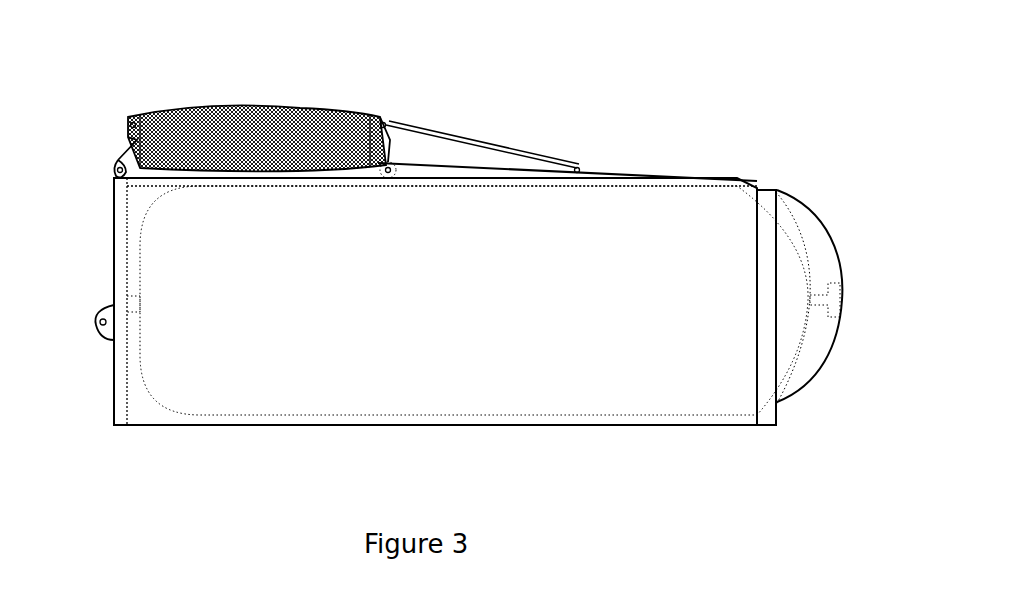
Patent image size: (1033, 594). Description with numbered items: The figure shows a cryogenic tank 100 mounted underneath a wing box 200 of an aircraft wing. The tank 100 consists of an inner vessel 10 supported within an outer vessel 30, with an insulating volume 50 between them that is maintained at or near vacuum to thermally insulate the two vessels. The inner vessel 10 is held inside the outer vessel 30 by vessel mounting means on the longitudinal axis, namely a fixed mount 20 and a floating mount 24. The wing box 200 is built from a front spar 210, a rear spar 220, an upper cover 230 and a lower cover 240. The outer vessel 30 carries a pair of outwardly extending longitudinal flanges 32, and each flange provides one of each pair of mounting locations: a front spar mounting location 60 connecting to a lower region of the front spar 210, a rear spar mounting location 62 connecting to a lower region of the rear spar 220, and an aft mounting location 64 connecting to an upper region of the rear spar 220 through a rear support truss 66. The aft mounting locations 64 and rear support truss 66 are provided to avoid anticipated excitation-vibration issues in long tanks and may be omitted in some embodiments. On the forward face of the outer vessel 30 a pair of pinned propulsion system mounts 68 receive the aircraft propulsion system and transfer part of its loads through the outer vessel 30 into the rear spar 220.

The inner vessel 10 is at (788, 370).
The fixed mount 20 is at (137, 285).
The floating mount 24 is at (813, 293).
The outer vessel 30 is at (800, 212).
The longitudinal flanges 32 is at (510, 173).
The insulating volume 50 is at (157, 407).
The front spar mounting locations 60 is at (118, 172).
The rear spar mounting locations 62 is at (388, 178).
The aft mounting locations 64 is at (577, 174).
The rear support truss 66 is at (490, 143).
The propulsion system mounts 68 is at (101, 328).
The tank 100 is at (768, 137).
The wing box 200 is at (274, 97).
The front spar 210 is at (137, 138).
The rear spar 220 is at (373, 153).
The upper cover 230 is at (188, 107).
The lower cover 240 is at (235, 170).